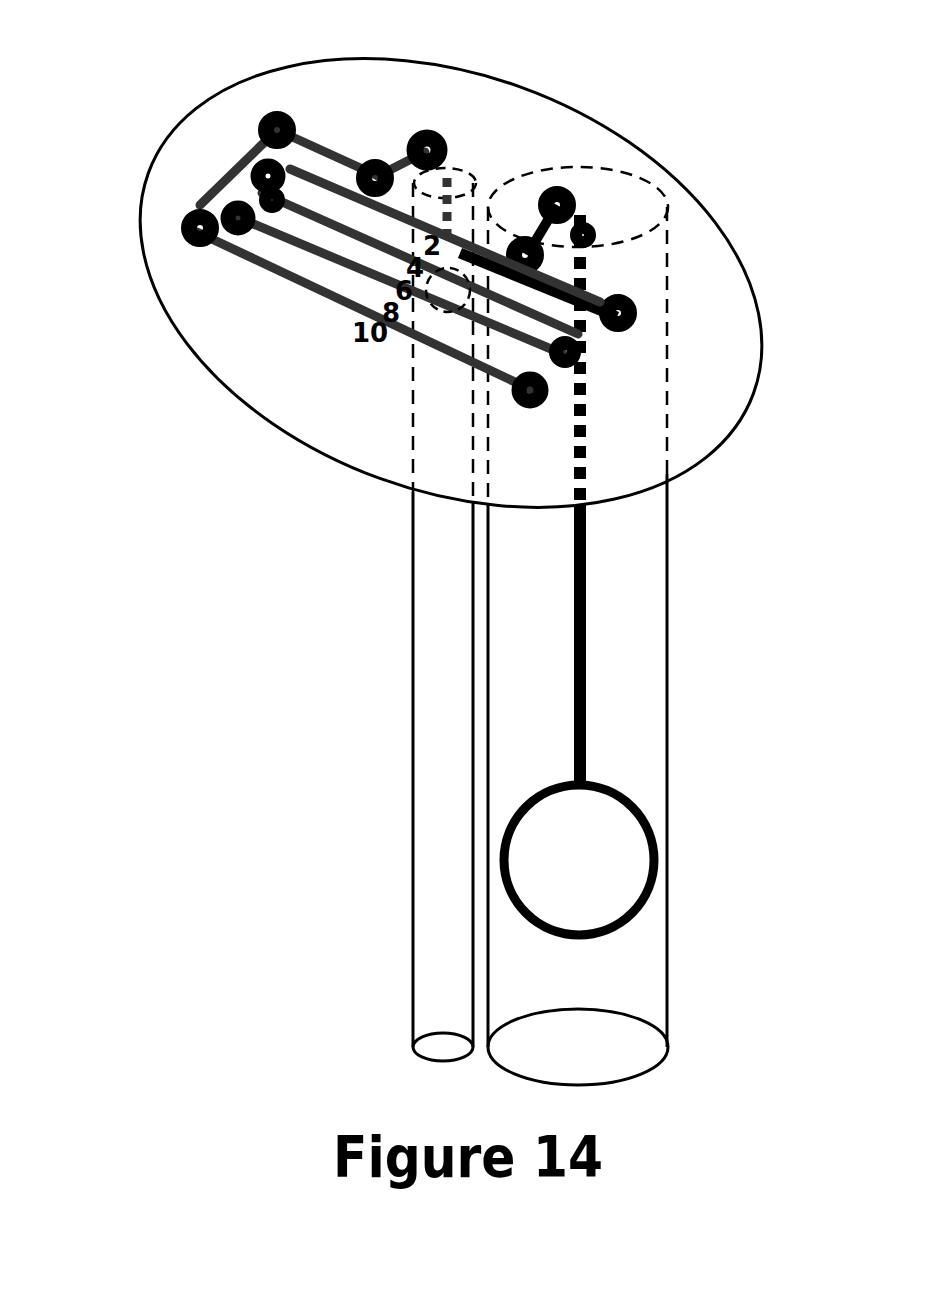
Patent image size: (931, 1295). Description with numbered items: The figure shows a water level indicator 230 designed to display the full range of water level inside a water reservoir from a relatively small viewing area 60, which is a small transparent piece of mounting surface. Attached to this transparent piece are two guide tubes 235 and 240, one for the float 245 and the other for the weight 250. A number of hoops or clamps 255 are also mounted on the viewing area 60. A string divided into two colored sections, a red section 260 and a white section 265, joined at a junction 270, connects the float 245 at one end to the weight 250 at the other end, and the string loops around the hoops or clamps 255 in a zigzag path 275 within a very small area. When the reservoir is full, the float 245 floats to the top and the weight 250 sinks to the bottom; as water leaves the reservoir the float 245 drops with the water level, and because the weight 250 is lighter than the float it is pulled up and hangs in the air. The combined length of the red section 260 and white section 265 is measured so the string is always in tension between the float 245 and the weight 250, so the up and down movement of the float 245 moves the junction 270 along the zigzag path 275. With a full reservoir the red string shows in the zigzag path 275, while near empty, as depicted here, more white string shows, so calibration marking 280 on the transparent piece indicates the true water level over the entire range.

The viewing area 60 is at (658, 163).
The water level indicator 230 is at (232, 752).
The guide tube 235 is at (666, 912).
The guide tube 240 is at (412, 600).
The float 245 is at (653, 835).
The weight 250 is at (430, 313).
The hoops or clamps 255 is at (177, 233).
The red section 260 is at (590, 673).
The white section 265 is at (225, 175).
The junction 270 is at (462, 257).
The zigzag path 275 is at (292, 280).
The calibration marking 280 is at (353, 337).